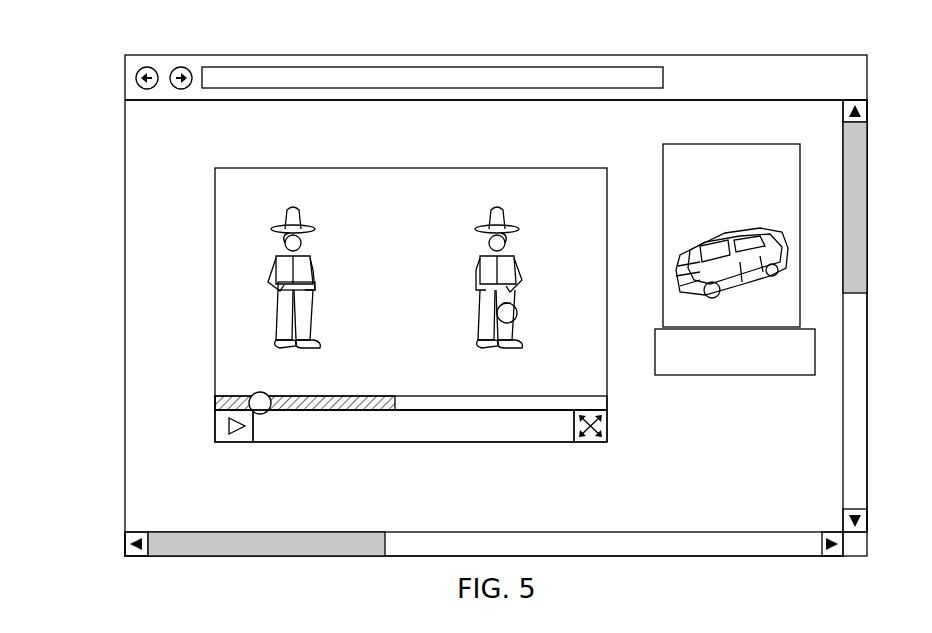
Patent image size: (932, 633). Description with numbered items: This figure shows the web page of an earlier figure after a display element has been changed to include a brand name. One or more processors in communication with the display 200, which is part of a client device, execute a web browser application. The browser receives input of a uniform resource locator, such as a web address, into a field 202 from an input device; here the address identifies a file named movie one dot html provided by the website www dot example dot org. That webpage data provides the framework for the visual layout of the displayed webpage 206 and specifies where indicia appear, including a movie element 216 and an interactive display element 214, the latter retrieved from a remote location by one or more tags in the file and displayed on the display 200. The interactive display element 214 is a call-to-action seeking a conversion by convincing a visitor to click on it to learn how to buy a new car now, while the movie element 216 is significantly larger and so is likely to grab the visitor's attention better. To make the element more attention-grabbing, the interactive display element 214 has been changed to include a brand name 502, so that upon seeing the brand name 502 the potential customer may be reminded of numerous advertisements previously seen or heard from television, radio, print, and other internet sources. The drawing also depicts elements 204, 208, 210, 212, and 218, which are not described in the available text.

The display 200 is at (124, 184).
The field 202 is at (289, 67).
The navigation buttons 204 is at (147, 67).
The webpage 206 is at (144, 287).
The video player frame 208 is at (215, 184).
The play button 210 is at (245, 442).
The time display 212 is at (342, 442).
The interactive display element 214 is at (787, 149).
The movie element 216 is at (402, 204).
The scroll bars 218 is at (868, 196).
The brand name 502 is at (802, 362).